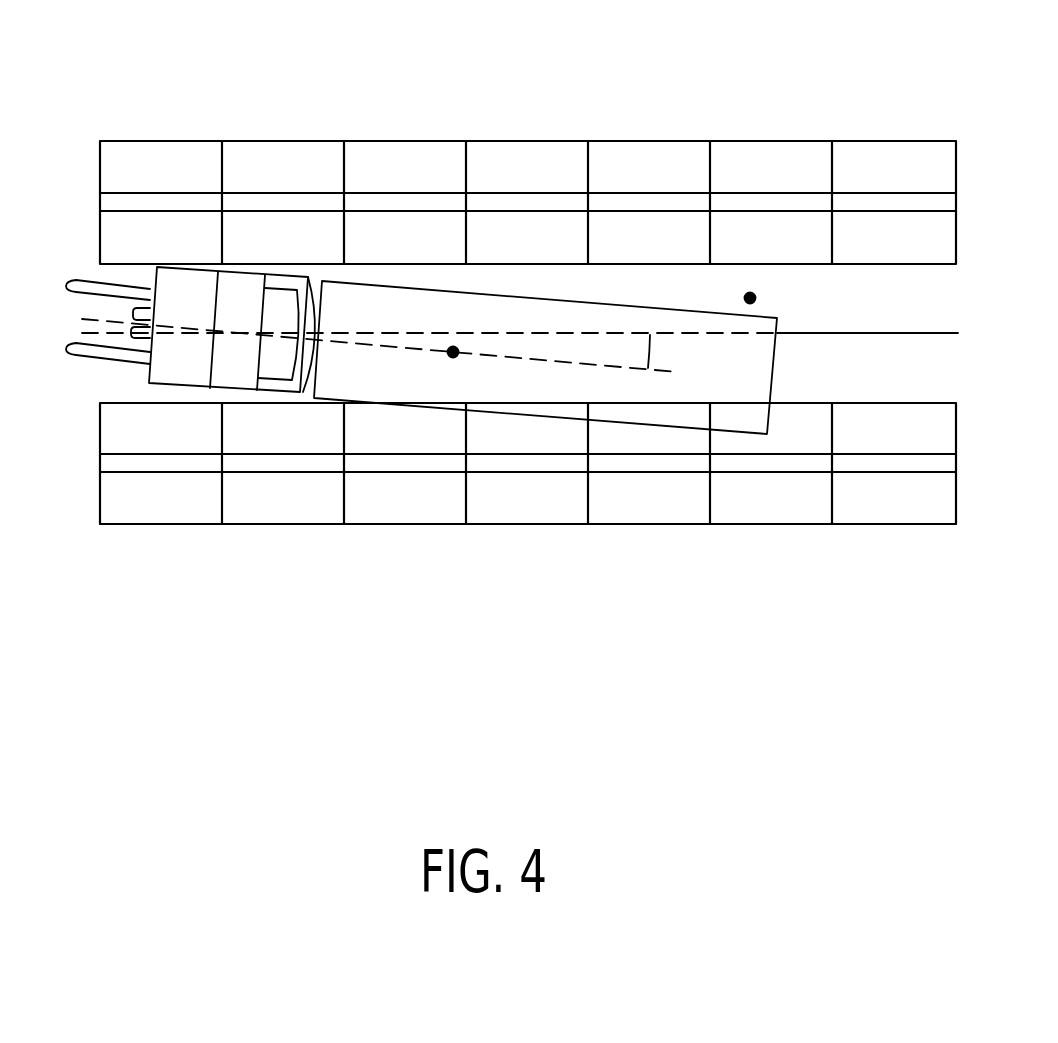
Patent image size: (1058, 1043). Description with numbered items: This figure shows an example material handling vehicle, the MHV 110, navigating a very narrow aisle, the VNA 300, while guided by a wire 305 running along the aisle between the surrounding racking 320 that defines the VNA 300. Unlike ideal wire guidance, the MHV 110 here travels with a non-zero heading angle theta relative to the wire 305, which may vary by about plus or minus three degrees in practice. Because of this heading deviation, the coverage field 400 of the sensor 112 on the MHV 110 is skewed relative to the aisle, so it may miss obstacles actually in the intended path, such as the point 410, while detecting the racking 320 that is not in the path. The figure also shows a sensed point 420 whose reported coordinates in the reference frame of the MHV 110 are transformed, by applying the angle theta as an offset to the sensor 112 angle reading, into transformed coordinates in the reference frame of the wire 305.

The MHV 110 is at (172, 293).
The sensor 112 is at (309, 280).
The VNA 300 is at (865, 378).
The wire 305 is at (857, 333).
The racking 320 is at (797, 140).
The coverage field 400 is at (623, 333).
The point 410 is at (751, 268).
The point 420 is at (451, 385).